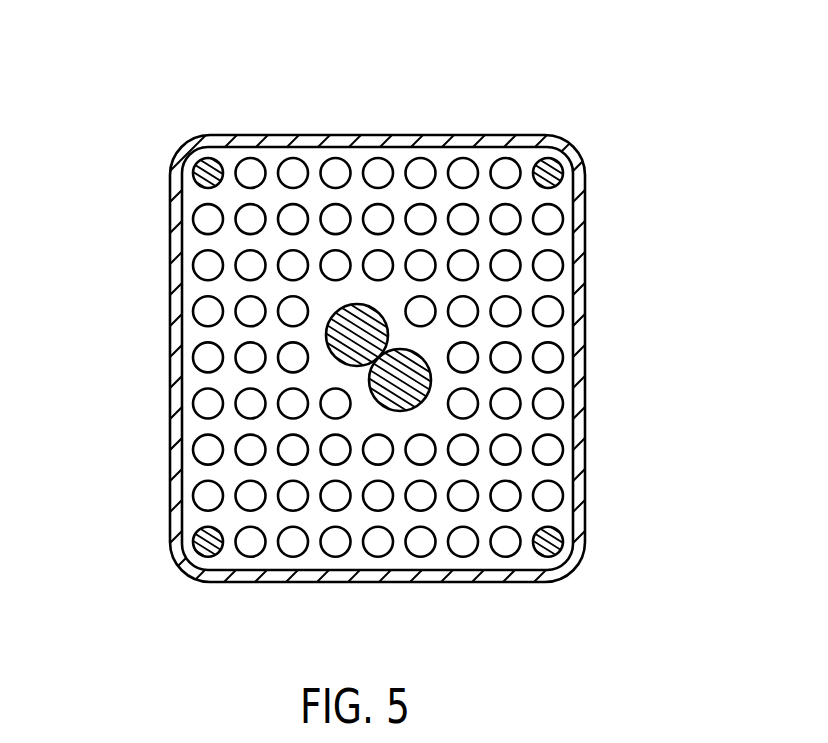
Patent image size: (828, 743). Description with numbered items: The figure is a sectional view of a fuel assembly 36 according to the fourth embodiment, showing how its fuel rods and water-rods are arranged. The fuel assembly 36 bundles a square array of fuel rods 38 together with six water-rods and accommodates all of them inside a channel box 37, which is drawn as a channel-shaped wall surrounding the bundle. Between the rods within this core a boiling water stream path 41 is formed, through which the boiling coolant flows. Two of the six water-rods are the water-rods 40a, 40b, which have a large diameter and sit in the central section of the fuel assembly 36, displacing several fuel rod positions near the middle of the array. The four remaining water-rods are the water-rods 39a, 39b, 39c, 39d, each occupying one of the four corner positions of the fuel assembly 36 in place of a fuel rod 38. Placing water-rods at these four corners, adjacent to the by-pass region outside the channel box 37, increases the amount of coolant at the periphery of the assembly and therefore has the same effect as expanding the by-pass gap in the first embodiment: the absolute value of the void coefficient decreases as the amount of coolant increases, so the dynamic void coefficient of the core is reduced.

The fuel assembly 36 is at (328, 86).
The channel box 37 is at (586, 477).
The fuel rod 38 is at (563, 265).
The water-rod 39a is at (208, 158).
The water-rod 39b is at (563, 174).
The water-rod 39c is at (546, 557).
The water-rod 39d is at (193, 542).
The water-rod 40a is at (355, 304).
The water-rod 40b is at (400, 411).
The boiling water stream path 41 is at (563, 338).